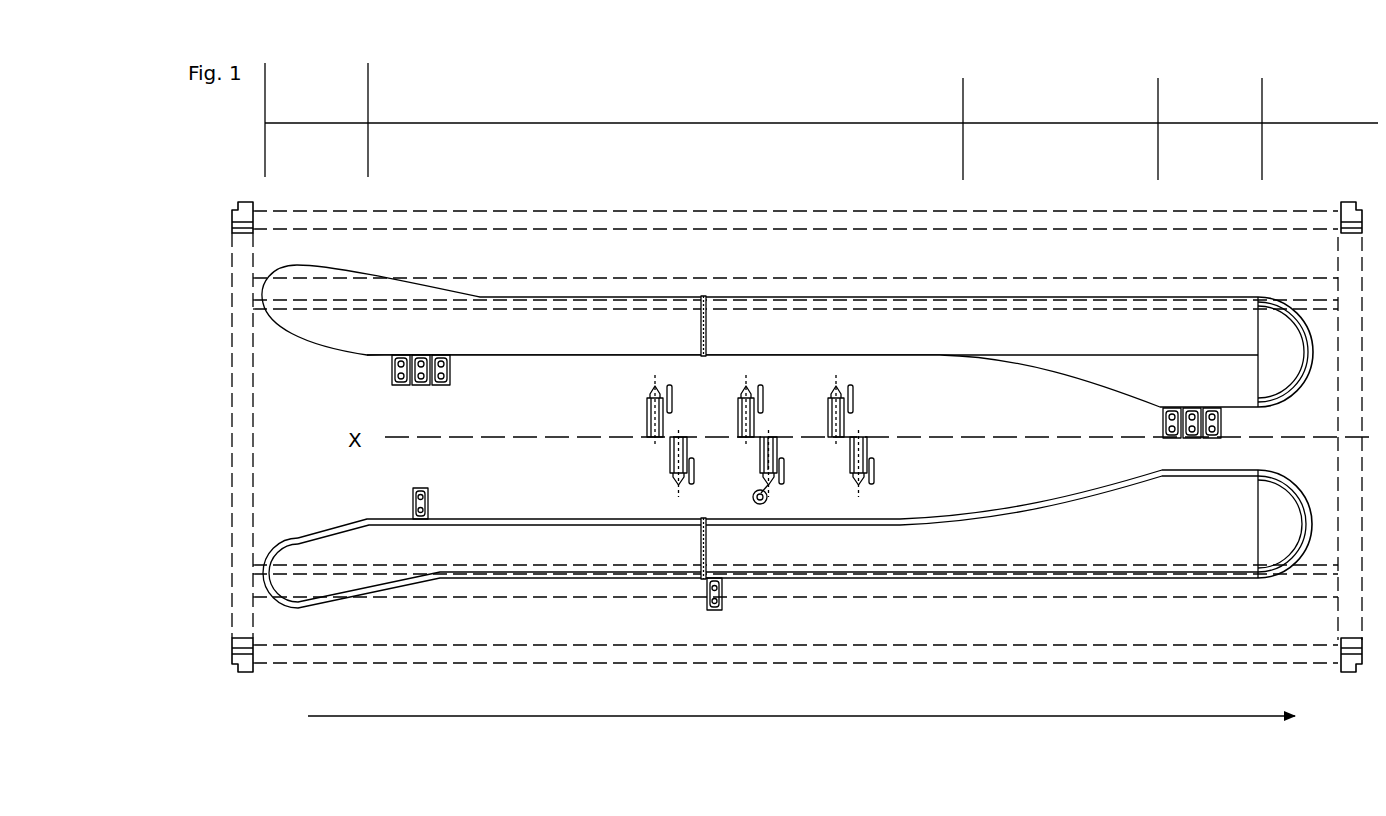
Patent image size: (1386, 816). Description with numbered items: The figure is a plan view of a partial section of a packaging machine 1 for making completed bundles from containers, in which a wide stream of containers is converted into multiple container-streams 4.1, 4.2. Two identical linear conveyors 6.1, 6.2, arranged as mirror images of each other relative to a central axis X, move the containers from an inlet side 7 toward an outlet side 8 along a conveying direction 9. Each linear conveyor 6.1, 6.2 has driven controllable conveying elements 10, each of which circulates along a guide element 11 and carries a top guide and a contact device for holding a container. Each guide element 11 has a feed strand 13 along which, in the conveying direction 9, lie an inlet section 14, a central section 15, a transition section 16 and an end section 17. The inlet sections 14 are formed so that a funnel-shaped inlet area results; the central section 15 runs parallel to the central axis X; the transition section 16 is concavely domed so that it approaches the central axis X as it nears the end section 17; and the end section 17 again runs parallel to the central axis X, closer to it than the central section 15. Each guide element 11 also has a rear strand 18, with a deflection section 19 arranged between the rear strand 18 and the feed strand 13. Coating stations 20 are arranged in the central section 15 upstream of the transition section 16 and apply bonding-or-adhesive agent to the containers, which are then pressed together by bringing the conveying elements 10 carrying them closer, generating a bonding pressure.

The packaging machine 1 is at (722, 200).
The container-stream 4.1 is at (366, 372).
The container-stream 4.2 is at (366, 510).
The linear conveyor 6.1 is at (345, 325).
The linear conveyor 6.2 is at (316, 568).
The inlet side 7 is at (258, 717).
The outlet side 8 is at (1356, 717).
The conveying direction 9 is at (801, 705).
The conveying element 10 is at (438, 497).
The guide element 11 is at (743, 437).
The feed strand 13 is at (886, 356).
The inlet section 14 is at (821, 120).
The central section 15 is at (776, 127).
The transition section 16 is at (1090, 129).
The end section 17 is at (1222, 129).
The rear strand 18 is at (985, 299).
The deflection section 19 is at (268, 276).
The coating station 20 is at (664, 463).